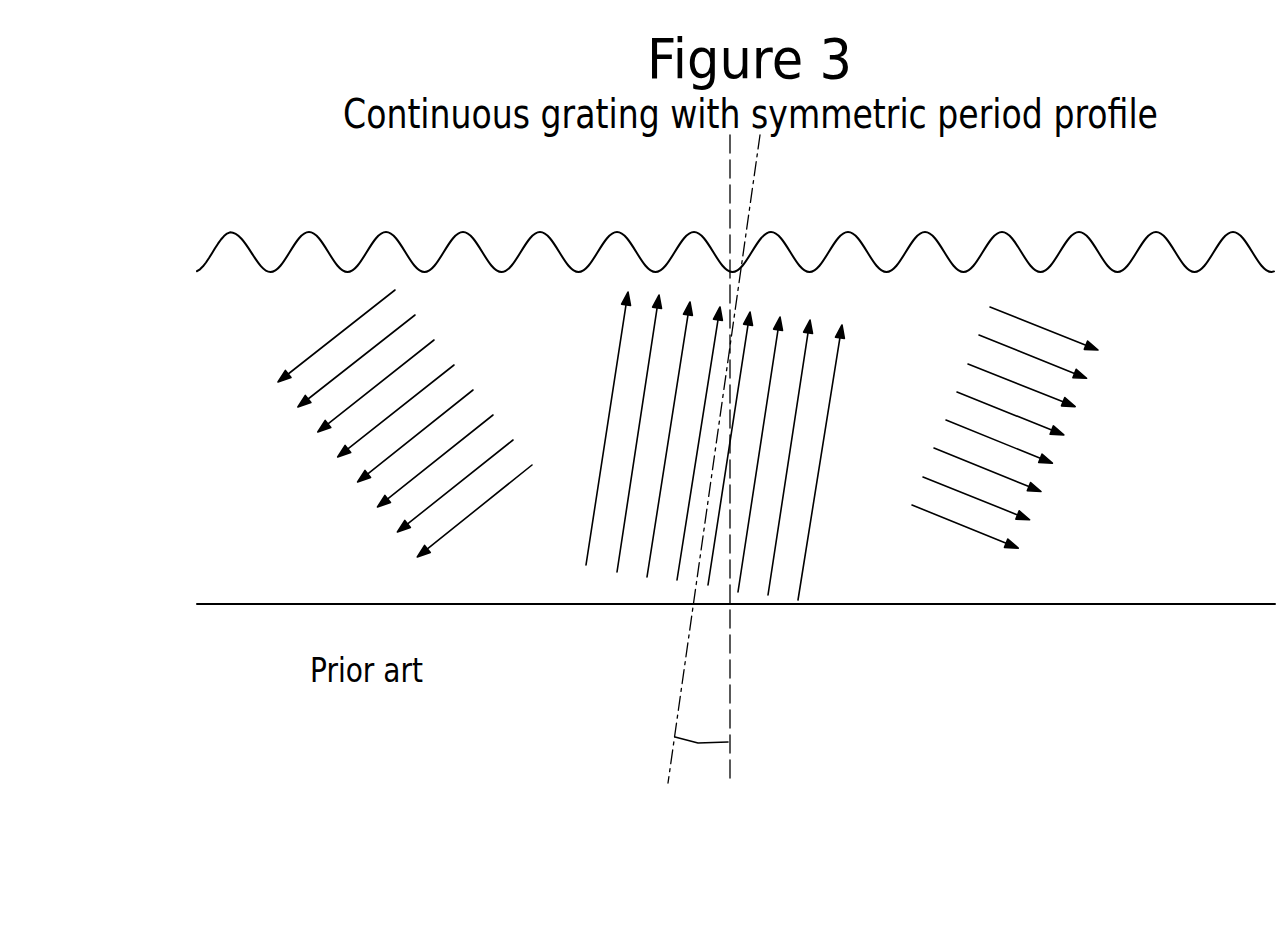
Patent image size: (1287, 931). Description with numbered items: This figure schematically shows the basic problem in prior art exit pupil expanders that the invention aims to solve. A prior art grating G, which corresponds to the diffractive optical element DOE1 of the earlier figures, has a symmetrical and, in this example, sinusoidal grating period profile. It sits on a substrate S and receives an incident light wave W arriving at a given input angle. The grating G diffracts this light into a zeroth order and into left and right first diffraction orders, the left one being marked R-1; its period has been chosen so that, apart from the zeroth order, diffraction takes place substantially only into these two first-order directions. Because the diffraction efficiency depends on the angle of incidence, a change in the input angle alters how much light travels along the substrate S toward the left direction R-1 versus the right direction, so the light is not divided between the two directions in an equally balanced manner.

The diffractive optical element DOE1 is at (312, 184).
The grating G is at (532, 226).
The substrate S is at (736, 452).
The left first diffraction order R-1 is at (387, 423).
The incident light wave W is at (666, 447).